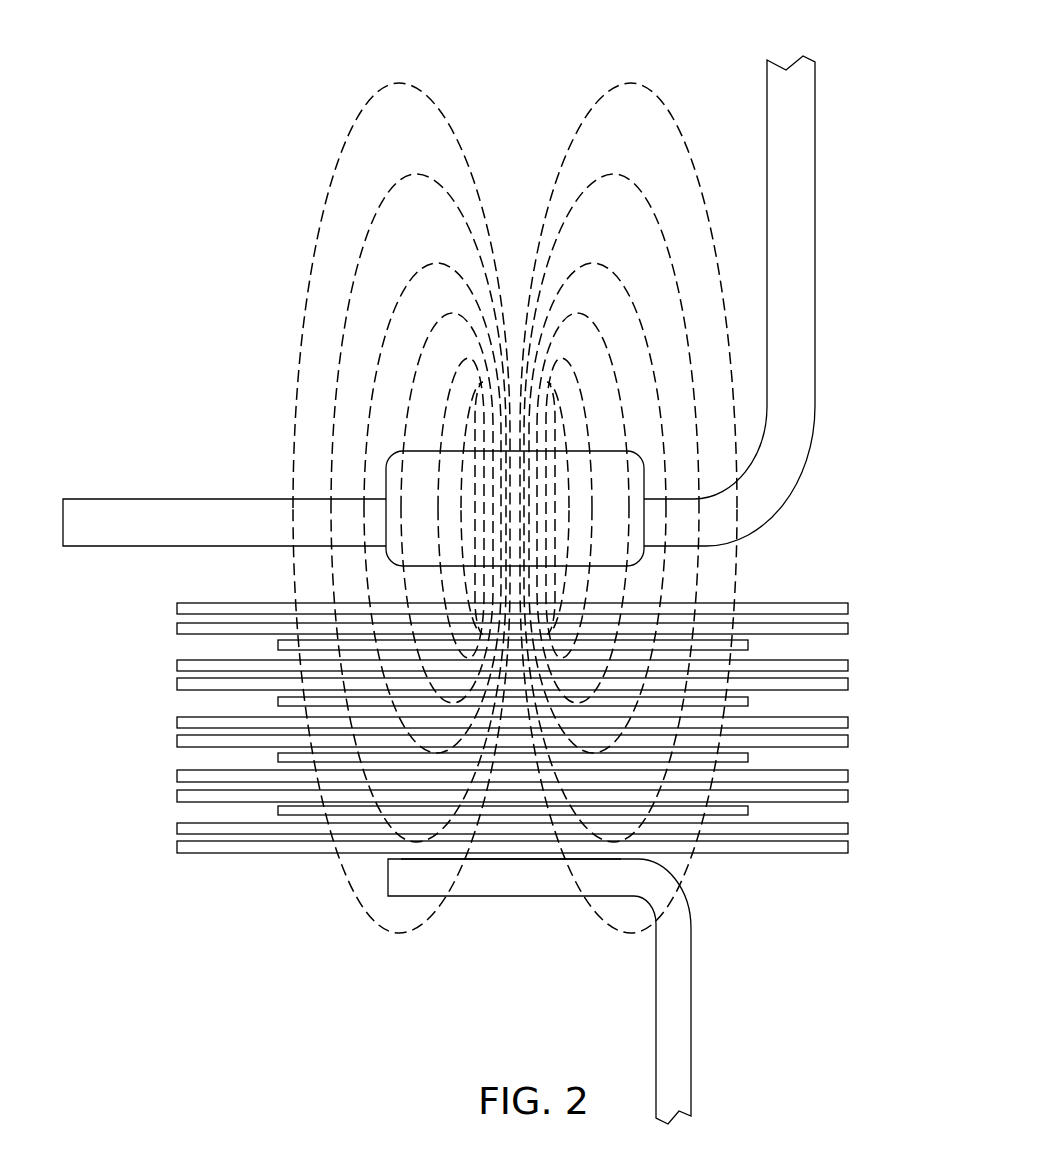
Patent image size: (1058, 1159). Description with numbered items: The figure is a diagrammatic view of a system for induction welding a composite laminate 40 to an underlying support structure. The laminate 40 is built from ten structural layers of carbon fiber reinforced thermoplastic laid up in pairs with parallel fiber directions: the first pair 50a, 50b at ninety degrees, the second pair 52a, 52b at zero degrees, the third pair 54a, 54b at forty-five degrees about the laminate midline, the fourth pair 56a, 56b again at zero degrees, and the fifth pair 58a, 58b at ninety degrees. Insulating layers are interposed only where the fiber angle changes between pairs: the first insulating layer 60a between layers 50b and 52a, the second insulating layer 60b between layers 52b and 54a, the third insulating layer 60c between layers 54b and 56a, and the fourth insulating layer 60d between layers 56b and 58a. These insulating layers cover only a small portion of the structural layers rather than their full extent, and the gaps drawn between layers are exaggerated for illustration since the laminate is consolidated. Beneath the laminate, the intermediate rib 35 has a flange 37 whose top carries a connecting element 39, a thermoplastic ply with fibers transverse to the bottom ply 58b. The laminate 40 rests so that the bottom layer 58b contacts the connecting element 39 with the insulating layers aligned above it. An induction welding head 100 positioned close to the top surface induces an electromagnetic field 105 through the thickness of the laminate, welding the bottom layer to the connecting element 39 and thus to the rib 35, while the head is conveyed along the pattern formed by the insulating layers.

The magnetic field lines 105 is at (638, 85).
The induction welding head 100 is at (816, 141).
The laminate 40 is at (140, 903).
The flange 37 is at (523, 897).
The connecting element 39 is at (490, 860).
The intermediate rib 35 is at (692, 1020).
The first structural layer 50a is at (848, 607).
The second structural layer 50b is at (848, 628).
The third structural layer 52a is at (848, 663).
The fourth structural layer 52b is at (848, 682).
The fifth structural layer 54a is at (176, 720).
The sixth structural layer 54b is at (176, 742).
The seventh structural layer 56a is at (176, 773).
The eighth structural layer 56b is at (176, 794).
The ninth structural layer 58a is at (848, 825).
The bottom ply 58b is at (848, 843).
The first insulating layer 60a is at (277, 643).
The second insulating layer 60b is at (748, 702).
The third insulating layer 60c is at (277, 755).
The fourth insulating layer 60d is at (283, 814).